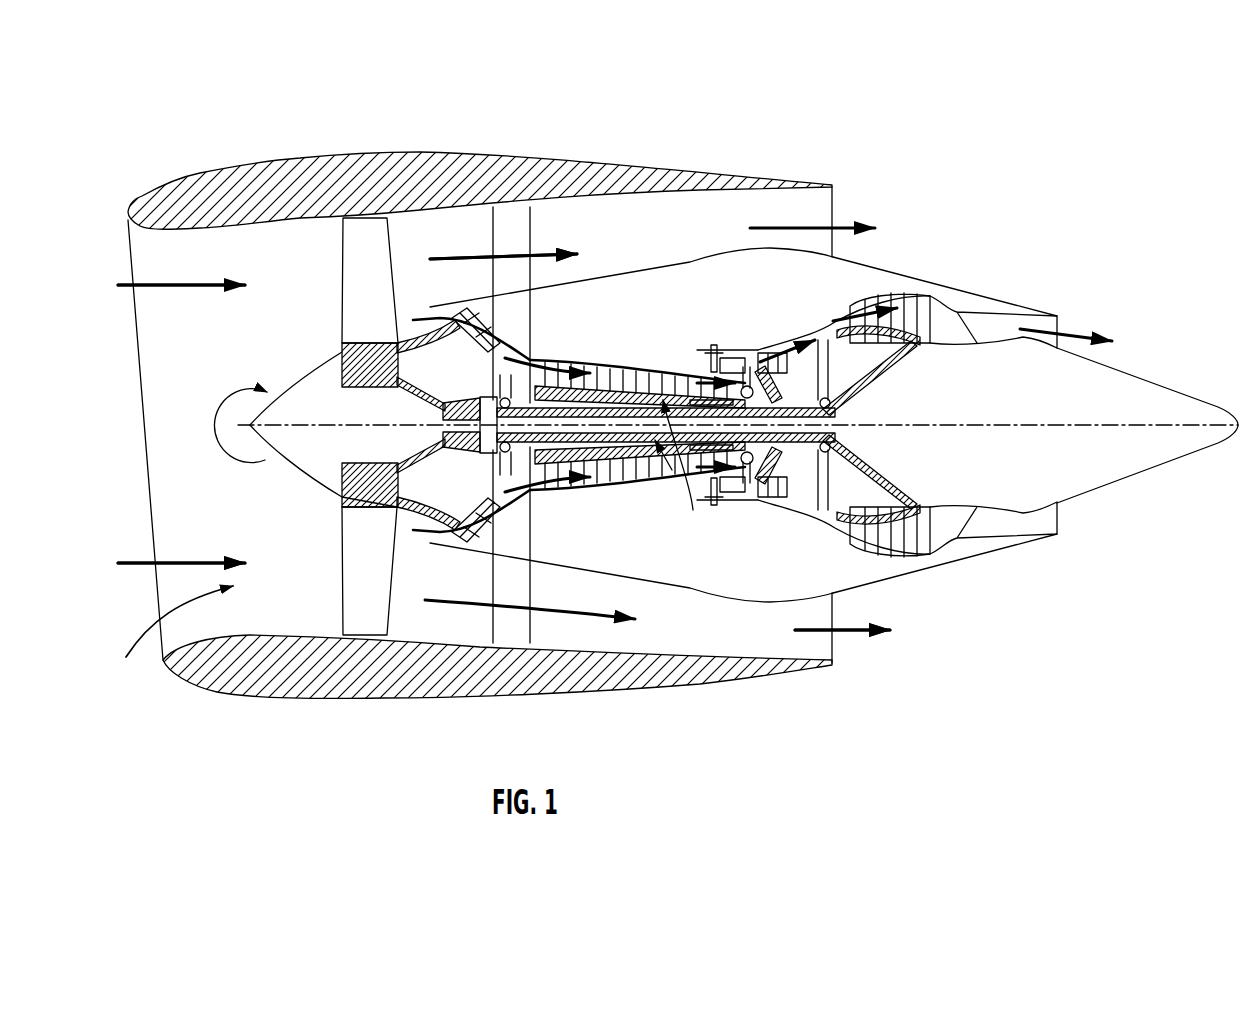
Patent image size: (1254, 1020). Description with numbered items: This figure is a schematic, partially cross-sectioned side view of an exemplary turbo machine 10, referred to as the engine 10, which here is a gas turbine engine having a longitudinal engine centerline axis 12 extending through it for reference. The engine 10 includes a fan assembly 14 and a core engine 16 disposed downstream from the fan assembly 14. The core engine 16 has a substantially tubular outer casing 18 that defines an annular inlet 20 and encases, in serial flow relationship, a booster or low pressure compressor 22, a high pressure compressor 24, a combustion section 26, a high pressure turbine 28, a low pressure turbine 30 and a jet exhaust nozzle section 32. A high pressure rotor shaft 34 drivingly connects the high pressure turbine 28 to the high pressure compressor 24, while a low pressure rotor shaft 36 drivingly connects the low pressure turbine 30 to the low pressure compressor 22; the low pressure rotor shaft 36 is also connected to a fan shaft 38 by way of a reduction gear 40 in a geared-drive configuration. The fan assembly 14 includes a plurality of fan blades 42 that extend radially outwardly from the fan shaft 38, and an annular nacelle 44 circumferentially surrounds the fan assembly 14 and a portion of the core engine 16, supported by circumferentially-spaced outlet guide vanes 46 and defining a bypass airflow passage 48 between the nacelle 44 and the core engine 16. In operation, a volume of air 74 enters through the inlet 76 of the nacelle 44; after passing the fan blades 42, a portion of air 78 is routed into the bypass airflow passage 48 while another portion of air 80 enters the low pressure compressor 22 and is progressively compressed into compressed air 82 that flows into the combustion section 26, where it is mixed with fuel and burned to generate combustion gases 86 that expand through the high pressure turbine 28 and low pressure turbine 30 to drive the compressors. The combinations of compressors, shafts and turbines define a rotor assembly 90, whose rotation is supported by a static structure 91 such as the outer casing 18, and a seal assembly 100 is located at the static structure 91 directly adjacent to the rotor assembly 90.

The turbo machine 10 is at (975, 173).
The engine centerline axis 12 is at (1000, 425).
The fan assembly 14 is at (416, 232).
The core engine 16 is at (725, 247).
The outer casing 18 is at (653, 598).
The annular inlet 20 is at (428, 548).
The low pressure compressor 22 is at (483, 492).
The high pressure compressor 24 is at (560, 487).
The combustion section 26 is at (727, 503).
The high pressure turbine 28 is at (793, 517).
The low pressure turbine 30 is at (913, 570).
The jet exhaust nozzle section 32 is at (978, 550).
The high pressure rotor shaft 34 is at (763, 399).
The low pressure rotor shaft 36 is at (878, 374).
The fan shaft 38 is at (395, 389).
The reduction gear 40 is at (483, 380).
The fan blades 42 is at (355, 252).
The nacelle 44 is at (350, 158).
The outlet guide vanes 46 is at (522, 238).
The bypass airflow passage 48 is at (657, 249).
The air 74 is at (165, 285).
The inlet 76 is at (168, 634).
The bypass air portion 78 is at (478, 256).
The core air portion 80 is at (430, 306).
The compressed air 82 is at (537, 355).
The combustion gases 86 is at (838, 318).
The rotor assembly 90 is at (666, 467).
The static structure 91 is at (519, 335).
The seal assembly 100 is at (703, 366).